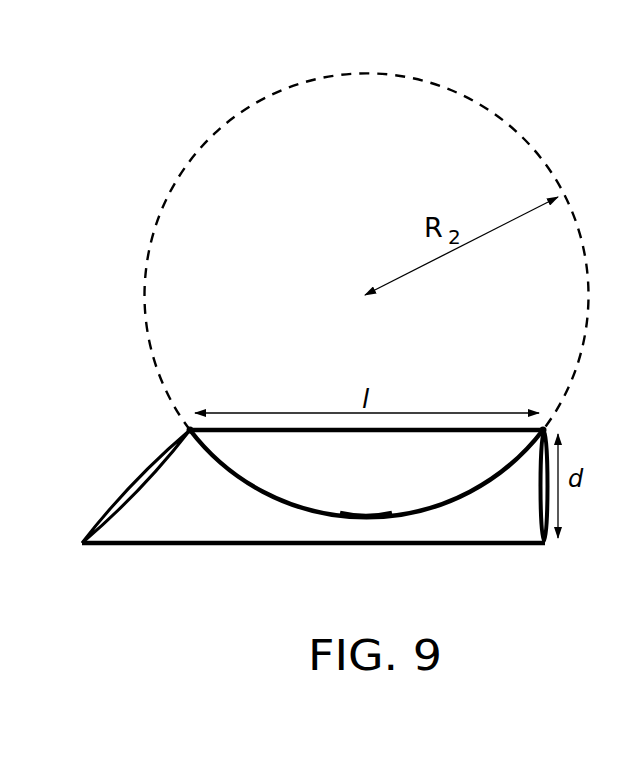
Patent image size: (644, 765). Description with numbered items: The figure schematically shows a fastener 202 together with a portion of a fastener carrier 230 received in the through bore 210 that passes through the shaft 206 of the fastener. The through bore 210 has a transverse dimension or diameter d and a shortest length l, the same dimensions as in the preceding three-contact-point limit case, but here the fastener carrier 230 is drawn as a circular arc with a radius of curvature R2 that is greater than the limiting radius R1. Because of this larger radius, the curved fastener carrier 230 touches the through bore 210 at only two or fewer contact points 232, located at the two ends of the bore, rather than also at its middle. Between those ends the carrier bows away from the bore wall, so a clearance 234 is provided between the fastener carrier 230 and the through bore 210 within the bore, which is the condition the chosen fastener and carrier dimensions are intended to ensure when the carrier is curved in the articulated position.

The fastener 202 is at (183, 550).
The shaft 206 is at (461, 544).
The through bore 210 is at (133, 484).
The fastener carrier 230 is at (283, 498).
The contact points 232 is at (188, 428).
The clearance 234 is at (362, 529).